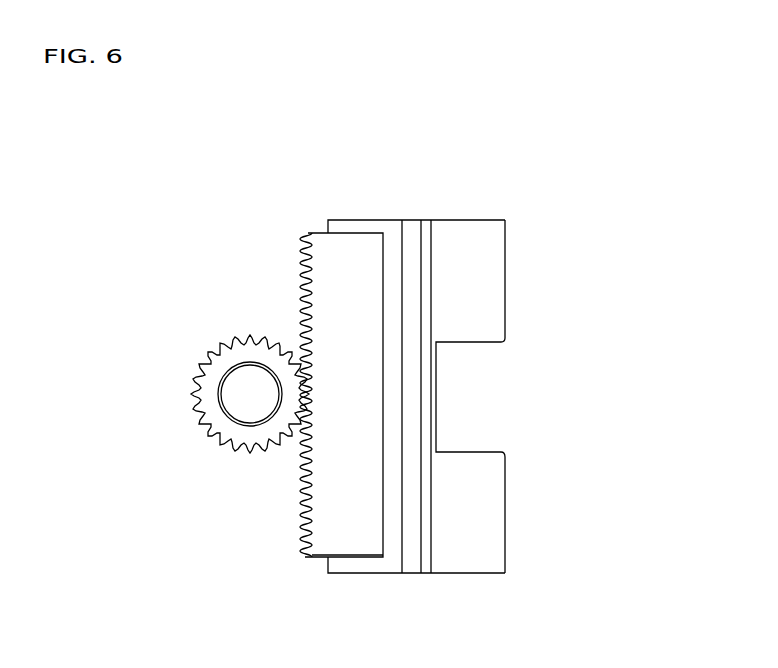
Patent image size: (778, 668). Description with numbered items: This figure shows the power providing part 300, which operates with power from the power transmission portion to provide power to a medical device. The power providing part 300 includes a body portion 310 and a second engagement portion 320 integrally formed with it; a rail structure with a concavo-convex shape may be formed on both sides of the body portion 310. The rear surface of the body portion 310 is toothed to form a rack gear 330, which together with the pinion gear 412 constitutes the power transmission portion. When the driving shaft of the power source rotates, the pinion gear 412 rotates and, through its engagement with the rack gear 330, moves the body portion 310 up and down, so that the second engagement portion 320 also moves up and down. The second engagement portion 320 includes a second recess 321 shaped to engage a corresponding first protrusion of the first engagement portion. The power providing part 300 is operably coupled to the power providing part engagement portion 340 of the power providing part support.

The power providing part 300 is at (352, 210).
The body portion 310 is at (378, 573).
The second engagement portion 320 is at (505, 237).
The second recess 321 is at (488, 393).
The rack gear 330 is at (302, 243).
The power providing part engagement portion 340 is at (413, 224).
The pinion gear 412 is at (197, 378).